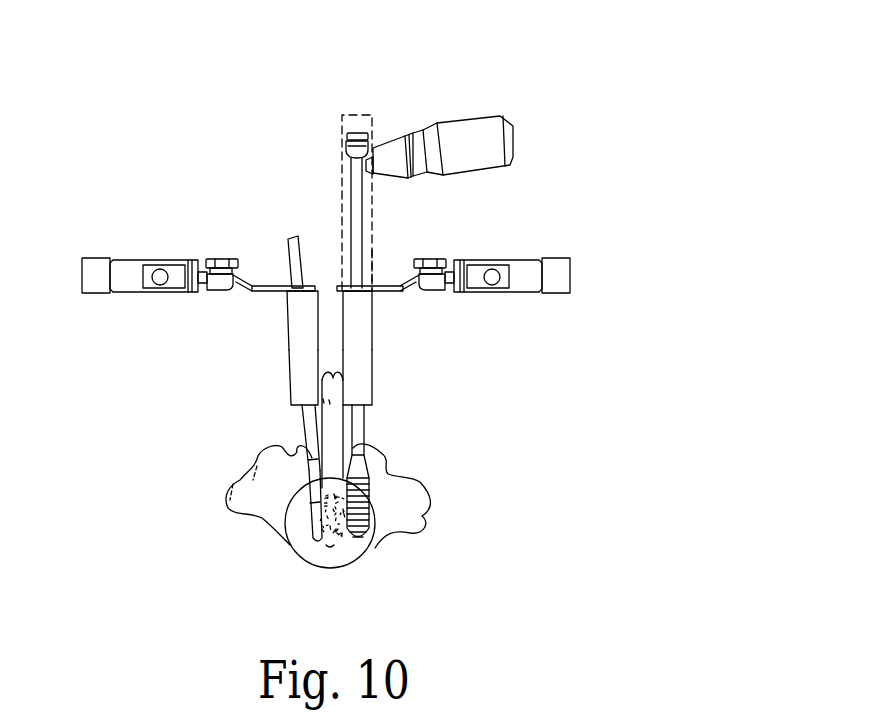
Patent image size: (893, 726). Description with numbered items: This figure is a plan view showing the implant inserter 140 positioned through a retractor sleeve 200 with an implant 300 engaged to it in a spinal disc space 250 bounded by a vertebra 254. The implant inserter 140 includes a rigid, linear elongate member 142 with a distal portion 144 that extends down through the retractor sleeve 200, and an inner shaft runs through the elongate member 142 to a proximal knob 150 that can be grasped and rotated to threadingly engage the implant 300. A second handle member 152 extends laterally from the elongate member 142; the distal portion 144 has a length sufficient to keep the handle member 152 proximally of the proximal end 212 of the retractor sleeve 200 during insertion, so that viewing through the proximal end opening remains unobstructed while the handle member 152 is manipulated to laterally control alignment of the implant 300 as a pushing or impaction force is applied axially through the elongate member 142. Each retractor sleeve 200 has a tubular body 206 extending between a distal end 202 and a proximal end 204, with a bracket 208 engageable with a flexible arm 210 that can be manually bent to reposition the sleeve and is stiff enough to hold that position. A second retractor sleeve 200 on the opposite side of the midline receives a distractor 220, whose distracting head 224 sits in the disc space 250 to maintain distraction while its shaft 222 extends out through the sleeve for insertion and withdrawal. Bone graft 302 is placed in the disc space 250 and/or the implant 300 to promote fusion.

The implant inserter 140 is at (402, 84).
The elongate member 142 is at (372, 199).
The distal portion 144 is at (368, 253).
The knob 150 is at (347, 134).
The second handle member 152 is at (472, 118).
The retractor sleeve 200 is at (276, 348).
The distal end 202 is at (287, 292).
The proximal end 204 is at (300, 407).
The tubular body 206 is at (291, 383).
The bracket 208 is at (265, 288).
The flexible arm 210 is at (125, 258).
The proximal end 212 is at (352, 112).
The distractor 220 is at (276, 238).
The shaft 222 is at (298, 238).
The distracting head 224 is at (310, 517).
The disc space 250 is at (295, 553).
The vertebra 254 is at (430, 480).
The implant 300 is at (363, 530).
The bone graft 302 is at (330, 550).